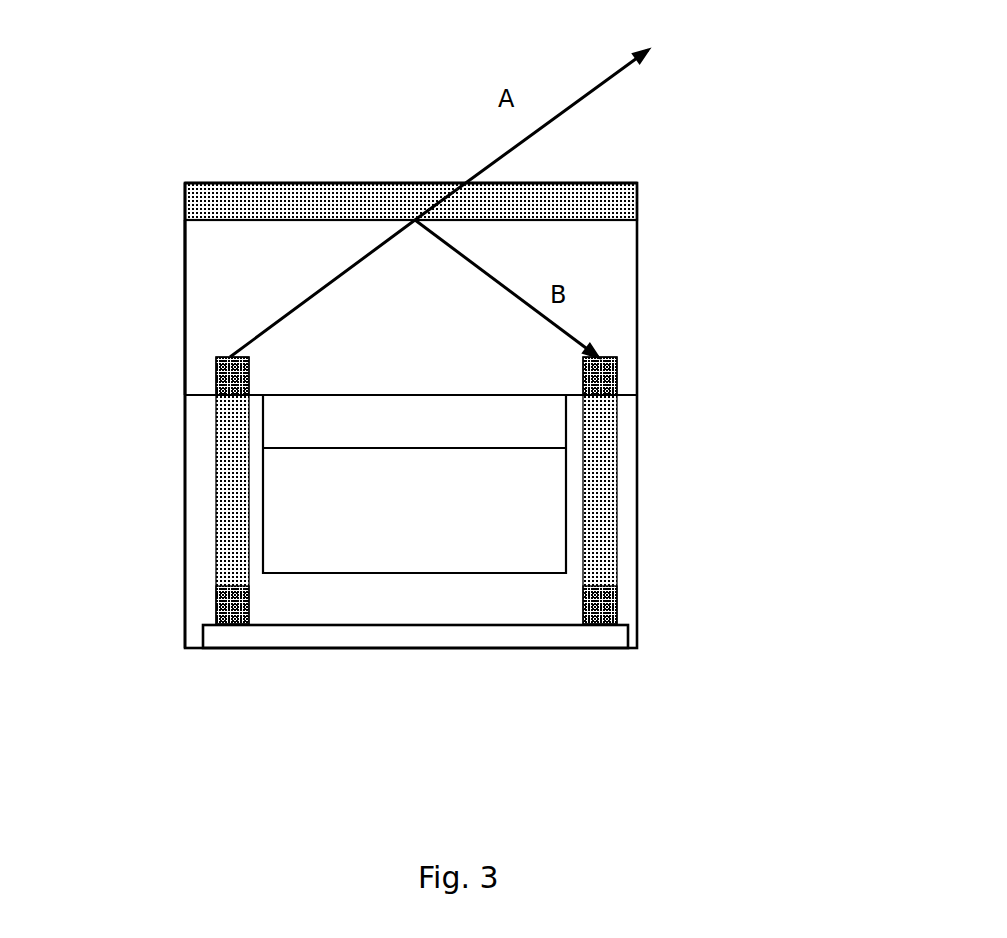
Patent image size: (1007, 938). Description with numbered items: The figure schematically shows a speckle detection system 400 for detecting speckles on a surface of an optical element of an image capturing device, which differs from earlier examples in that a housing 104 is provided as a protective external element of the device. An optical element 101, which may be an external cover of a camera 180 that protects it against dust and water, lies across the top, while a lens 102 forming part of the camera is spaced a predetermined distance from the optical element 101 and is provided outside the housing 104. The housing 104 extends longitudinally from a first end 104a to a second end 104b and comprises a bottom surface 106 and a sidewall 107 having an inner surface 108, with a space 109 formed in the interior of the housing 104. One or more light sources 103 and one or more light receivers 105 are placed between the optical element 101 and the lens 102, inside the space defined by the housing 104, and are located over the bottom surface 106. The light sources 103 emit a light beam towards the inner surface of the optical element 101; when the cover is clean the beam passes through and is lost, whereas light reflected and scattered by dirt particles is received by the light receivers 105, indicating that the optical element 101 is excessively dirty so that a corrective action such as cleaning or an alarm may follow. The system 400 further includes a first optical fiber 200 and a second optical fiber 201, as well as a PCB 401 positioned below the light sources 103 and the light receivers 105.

The optical element 101 is at (613, 190).
The lens 102 is at (337, 430).
The light sources 103 is at (233, 362).
The housing 104 is at (637, 318).
The first end 104a is at (253, 170).
The second end 104b is at (185, 394).
The light receivers 105 is at (608, 375).
The bottom surface 106 is at (316, 393).
The sidewall 107 is at (185, 307).
The inner surface 108 is at (187, 260).
The space 109 is at (482, 343).
The camera 180 is at (480, 552).
The first optical fiber 200 is at (225, 483).
The second optical fiber 201 is at (600, 497).
The speckle detection system 400 is at (752, 97).
The PCB 401 is at (352, 635).